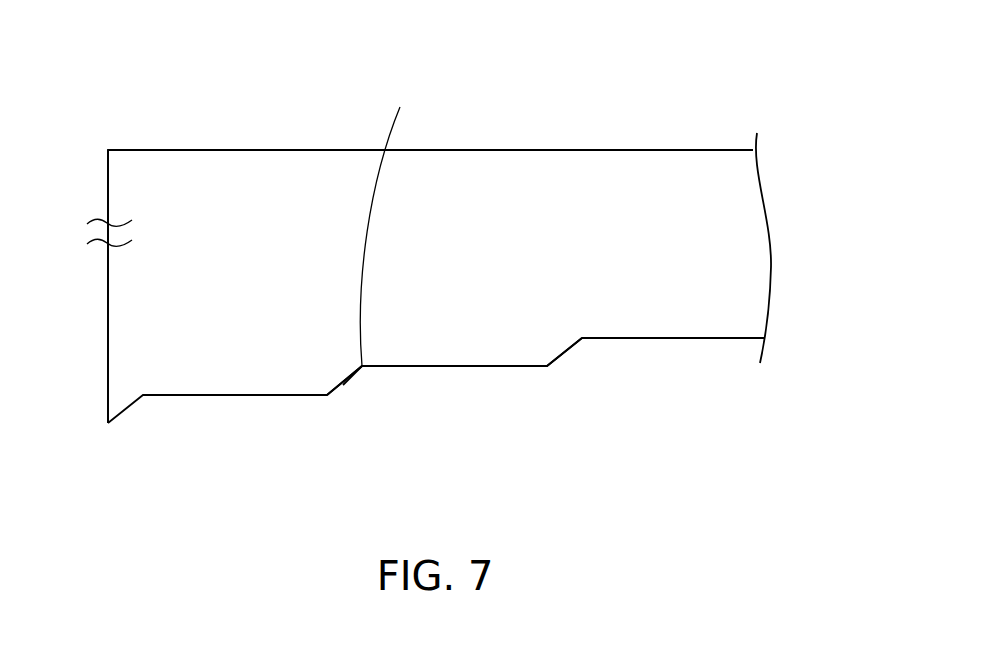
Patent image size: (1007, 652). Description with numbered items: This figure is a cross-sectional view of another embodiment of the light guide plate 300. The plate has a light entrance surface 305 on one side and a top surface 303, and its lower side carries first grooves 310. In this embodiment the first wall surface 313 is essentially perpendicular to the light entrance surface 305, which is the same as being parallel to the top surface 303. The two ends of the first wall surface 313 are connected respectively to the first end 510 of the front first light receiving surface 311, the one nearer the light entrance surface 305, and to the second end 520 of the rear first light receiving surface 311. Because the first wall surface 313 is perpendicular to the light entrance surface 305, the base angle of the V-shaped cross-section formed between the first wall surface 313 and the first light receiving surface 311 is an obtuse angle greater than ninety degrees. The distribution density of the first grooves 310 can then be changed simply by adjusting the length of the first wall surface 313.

The light guide plate 300 is at (83, 62).
The top surface 303 is at (570, 150).
The light entrance surface 305 is at (107, 192).
The first end 510 is at (392, 224).
The second end 520 is at (328, 395).
The first light receiving surface 311 is at (343, 385).
The first grooves 310 is at (375, 382).
The first wall surface 313 is at (453, 367).